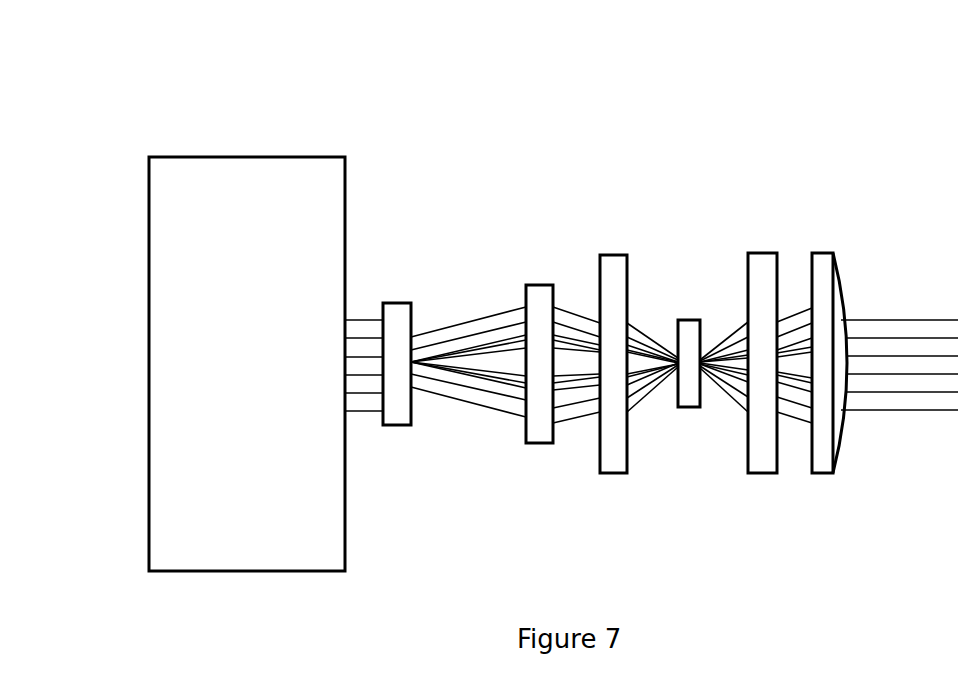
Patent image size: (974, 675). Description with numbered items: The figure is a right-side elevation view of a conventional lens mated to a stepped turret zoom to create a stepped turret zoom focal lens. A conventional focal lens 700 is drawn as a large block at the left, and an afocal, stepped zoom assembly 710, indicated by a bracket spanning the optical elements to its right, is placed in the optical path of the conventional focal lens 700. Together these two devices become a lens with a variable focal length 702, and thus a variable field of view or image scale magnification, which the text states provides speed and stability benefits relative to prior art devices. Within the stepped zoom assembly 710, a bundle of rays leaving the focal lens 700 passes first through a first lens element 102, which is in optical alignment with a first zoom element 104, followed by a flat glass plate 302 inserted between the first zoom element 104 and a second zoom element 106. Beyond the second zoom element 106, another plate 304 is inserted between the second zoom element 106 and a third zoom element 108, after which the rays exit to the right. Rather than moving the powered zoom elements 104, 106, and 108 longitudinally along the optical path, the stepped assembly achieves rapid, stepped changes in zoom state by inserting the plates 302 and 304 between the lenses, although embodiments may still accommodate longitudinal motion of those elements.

The conventional focal lens 700 is at (232, 157).
The lens with a variable focal length 702 is at (480, 65).
The afocal stepped zoom assembly 710 is at (847, 158).
The first lens element 102 is at (390, 303).
The first zoom element 104 is at (538, 285).
The flat glass plate 302 is at (613, 255).
The second zoom element 106 is at (683, 320).
The plate 304 is at (762, 253).
The third zoom element 108 is at (823, 253).